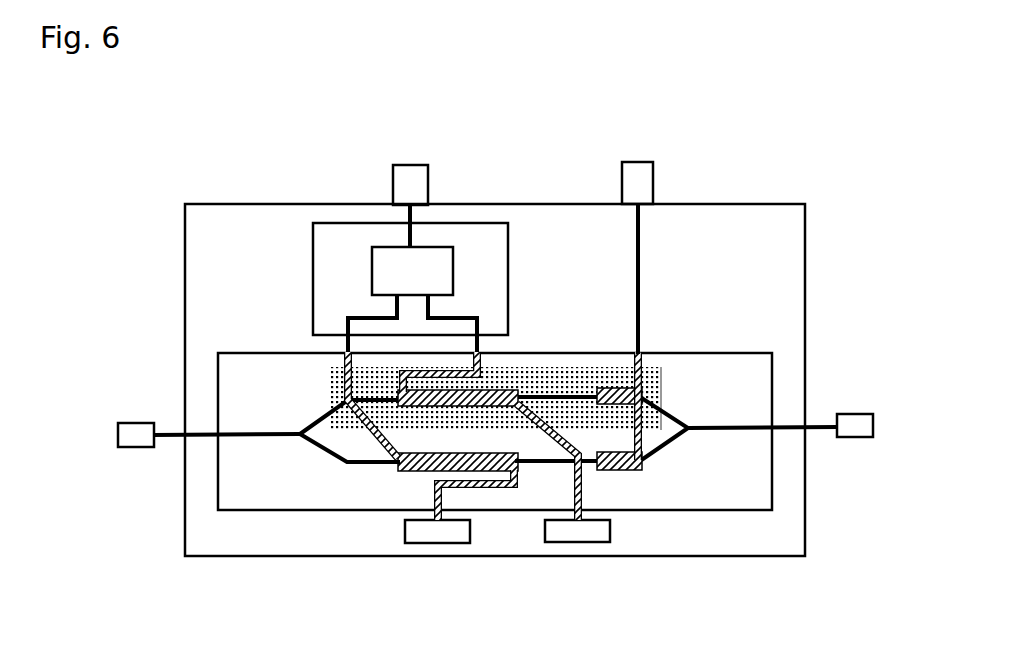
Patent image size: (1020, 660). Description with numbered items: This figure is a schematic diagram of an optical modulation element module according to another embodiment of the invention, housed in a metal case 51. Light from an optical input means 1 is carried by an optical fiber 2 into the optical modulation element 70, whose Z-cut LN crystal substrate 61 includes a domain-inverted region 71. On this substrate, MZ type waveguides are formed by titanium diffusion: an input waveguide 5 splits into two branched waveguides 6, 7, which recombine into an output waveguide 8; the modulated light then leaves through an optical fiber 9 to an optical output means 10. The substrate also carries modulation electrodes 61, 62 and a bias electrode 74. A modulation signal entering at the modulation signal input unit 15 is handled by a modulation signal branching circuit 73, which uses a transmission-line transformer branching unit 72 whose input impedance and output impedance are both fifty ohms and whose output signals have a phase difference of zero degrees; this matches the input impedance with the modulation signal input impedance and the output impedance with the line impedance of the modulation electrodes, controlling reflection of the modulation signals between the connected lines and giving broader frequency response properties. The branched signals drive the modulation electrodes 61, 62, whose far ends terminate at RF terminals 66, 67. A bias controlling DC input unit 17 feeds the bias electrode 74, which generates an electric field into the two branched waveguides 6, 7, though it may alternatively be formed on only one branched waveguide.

The optical input means 1 is at (135, 447).
The optical fiber 2 is at (173, 432).
The input waveguide 5 is at (267, 434).
The branched waveguide 6 is at (540, 464).
The branched waveguide 7 is at (580, 372).
The output waveguide 8 is at (722, 427).
The optical fiber 9 is at (787, 427).
The optical output means 10 is at (857, 413).
The modulation signal input unit 15 is at (428, 185).
The bias controlling DC input unit 17 is at (655, 185).
The metal case 51 is at (770, 203).
The modulation electrode 61 is at (218, 500).
The modulation electrode 62 is at (511, 370).
The RF terminal 66 is at (437, 532).
The RF terminal 67 is at (578, 530).
The optical modulation element 70 is at (228, 334).
The domain-inverted region 71 is at (663, 378).
The transformer branching unit 72 is at (412, 271).
The modulation signal branching circuit 73 is at (340, 223).
The bias electrode 74 is at (622, 464).